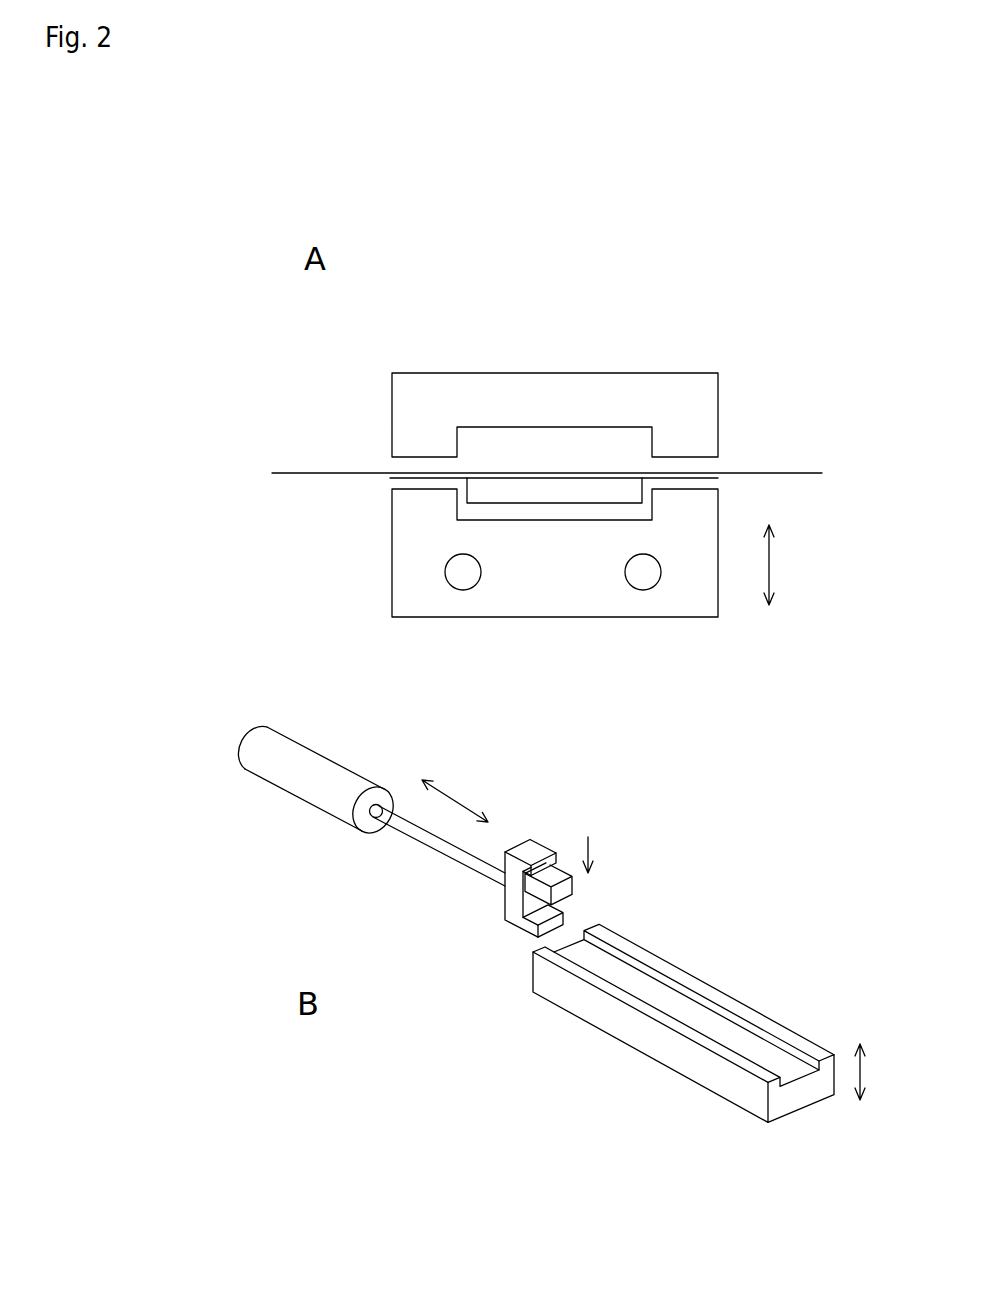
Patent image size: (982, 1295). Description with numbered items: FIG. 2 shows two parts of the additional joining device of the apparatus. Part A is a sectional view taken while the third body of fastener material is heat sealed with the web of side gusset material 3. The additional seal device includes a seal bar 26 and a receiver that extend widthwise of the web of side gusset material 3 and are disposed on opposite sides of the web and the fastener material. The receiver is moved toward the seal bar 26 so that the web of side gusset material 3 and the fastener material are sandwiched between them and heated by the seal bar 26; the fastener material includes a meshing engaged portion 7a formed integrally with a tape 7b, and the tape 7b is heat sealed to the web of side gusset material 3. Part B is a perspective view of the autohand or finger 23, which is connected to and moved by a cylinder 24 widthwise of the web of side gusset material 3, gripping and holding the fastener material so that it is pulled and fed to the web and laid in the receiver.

The seal bar 26 is at (465, 382).
The web of side gusset material 3 is at (747, 473).
The tape 7b is at (423, 478).
The meshing engaged portion 7a is at (553, 493).
The cylinder 24 is at (323, 795).
The autohand or finger 23 is at (538, 848).